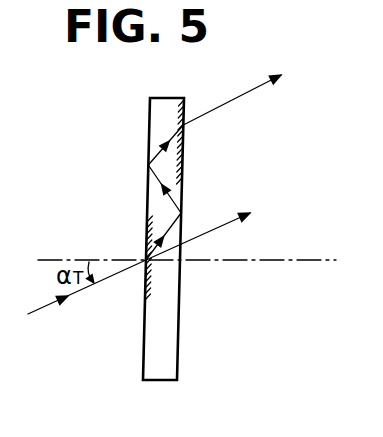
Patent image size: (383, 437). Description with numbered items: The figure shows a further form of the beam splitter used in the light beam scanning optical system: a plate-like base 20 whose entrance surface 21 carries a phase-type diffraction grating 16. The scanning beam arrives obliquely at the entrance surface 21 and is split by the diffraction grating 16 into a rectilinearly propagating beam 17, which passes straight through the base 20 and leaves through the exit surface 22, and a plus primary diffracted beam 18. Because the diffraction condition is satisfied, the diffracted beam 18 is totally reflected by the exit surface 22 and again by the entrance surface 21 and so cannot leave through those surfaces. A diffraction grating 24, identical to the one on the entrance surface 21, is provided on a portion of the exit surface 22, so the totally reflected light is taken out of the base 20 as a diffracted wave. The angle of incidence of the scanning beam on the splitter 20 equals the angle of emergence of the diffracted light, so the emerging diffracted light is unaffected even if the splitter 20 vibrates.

The diffraction grating 16 is at (145, 286).
The rectilinearly propagating beam 17 is at (218, 228).
The plus primary diffracted beam 18 is at (181, 219).
The base 20 is at (179, 335).
The entrance surface 21 is at (148, 189).
The exit surface 22 is at (182, 178).
The diffraction grating 24 is at (183, 130).